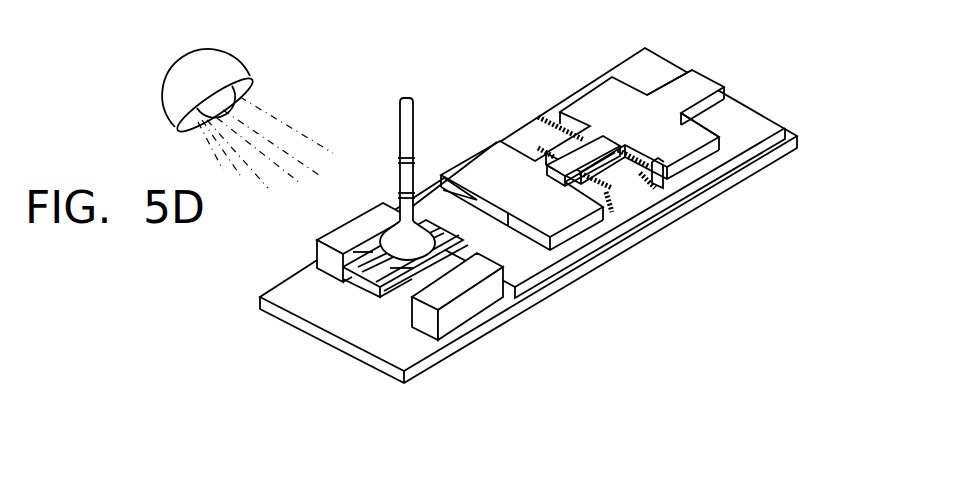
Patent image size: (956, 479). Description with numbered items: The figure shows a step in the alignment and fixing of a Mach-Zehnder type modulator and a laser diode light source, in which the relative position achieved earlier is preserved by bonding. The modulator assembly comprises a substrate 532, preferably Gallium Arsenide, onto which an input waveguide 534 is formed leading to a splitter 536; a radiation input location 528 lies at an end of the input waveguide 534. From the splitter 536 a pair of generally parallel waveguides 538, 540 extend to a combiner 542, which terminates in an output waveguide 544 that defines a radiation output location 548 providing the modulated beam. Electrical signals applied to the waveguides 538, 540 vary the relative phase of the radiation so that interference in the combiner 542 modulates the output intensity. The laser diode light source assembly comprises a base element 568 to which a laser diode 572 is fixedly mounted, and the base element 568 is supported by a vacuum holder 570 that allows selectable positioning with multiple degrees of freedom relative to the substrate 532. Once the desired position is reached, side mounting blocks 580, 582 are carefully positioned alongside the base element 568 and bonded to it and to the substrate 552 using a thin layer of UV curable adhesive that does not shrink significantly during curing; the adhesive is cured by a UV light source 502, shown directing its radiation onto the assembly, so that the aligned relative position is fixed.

The UV light source 502 is at (227, 62).
The radiation input location 528 is at (457, 236).
The substrate 532 is at (753, 132).
The input waveguide 534 is at (453, 220).
The splitter 536 is at (553, 210).
The waveguide 538 is at (553, 140).
The waveguide 540 is at (658, 189).
The combiner 542 is at (673, 127).
The output waveguide 544 is at (702, 84).
The radiation output location 548 is at (718, 78).
The substrate 552 is at (376, 358).
The base element 568 is at (383, 289).
The vacuum holder 570 is at (412, 104).
The laser diode 572 is at (352, 316).
The side mounting block 580 is at (447, 313).
The side mounting block 582 is at (343, 236).